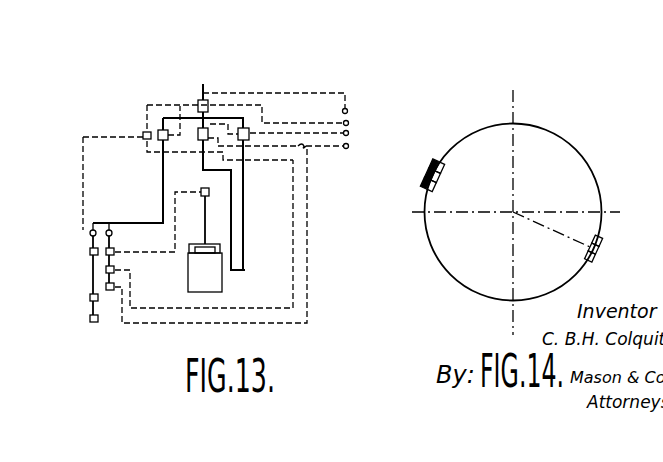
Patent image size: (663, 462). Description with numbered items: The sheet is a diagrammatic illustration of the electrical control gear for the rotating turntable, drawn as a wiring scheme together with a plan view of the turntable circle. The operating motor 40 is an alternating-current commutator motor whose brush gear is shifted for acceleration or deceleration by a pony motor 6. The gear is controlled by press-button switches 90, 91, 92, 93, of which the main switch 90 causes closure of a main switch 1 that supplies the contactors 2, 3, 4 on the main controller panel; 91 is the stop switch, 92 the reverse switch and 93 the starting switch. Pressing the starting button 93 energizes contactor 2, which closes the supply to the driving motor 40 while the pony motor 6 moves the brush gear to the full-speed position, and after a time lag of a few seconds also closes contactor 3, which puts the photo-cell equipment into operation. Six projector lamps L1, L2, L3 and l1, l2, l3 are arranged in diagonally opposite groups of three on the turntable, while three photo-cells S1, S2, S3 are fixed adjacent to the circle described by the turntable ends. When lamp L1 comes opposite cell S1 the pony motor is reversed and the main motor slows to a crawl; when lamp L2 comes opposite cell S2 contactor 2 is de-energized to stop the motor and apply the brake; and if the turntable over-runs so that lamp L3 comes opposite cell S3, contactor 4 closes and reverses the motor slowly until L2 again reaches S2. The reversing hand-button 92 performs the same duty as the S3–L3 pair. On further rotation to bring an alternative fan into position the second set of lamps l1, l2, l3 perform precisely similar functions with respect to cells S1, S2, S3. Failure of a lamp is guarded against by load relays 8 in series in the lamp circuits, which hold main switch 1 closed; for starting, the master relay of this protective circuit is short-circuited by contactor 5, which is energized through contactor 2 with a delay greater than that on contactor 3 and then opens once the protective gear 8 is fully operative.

In FIG. 13, the main switch 1 is at (203, 100).
In FIG. 13, the contactor 2 is at (208, 130).
In FIG. 13, the contactor 3 is at (165, 128).
In FIG. 13, the contactor 4 is at (246, 140).
In FIG. 13, the contactor 5 is at (143, 133).
In FIG. 13, the pony motor 6 is at (206, 211).
In FIG. 13, the load relays 8 is at (109, 230).
In FIG. 13, the operating motor 40 is at (212, 278).
In FIG. 13, the main switch 90 is at (291, 101).
In FIG. 13, the stop switch 91 is at (262, 121).
In FIG. 13, the reverse switch 92 is at (314, 146).
In FIG. 13, the starting switch 93 is at (346, 149).
In FIG. 13, the projector lamp L1 is at (90, 252).
In FIG. 14, the projector lamp L1 is at (432, 160).
In FIG. 13, the projector lamp L2 is at (90, 297).
In FIG. 14, the projector lamp L2 is at (436, 177).
In FIG. 13, the projector lamp L3 is at (90, 318).
In FIG. 14, the projector lamp L3 is at (440, 168).
In FIG. 13, the photo-cell S1 is at (115, 252).
In FIG. 14, the photo-cell S1 is at (425, 183).
In FIG. 13, the photo-cell S2 is at (115, 270).
In FIG. 14, the photo-cell S2 is at (430, 174).
In FIG. 13, the photo-cell S3 is at (115, 287).
In FIG. 14, the photo-cell S3 is at (424, 156).
In FIG. 14, the projector lamp l1 is at (597, 240).
In FIG. 14, the projector lamp l2 is at (593, 248).
In FIG. 14, the projector lamp l3 is at (600, 241).